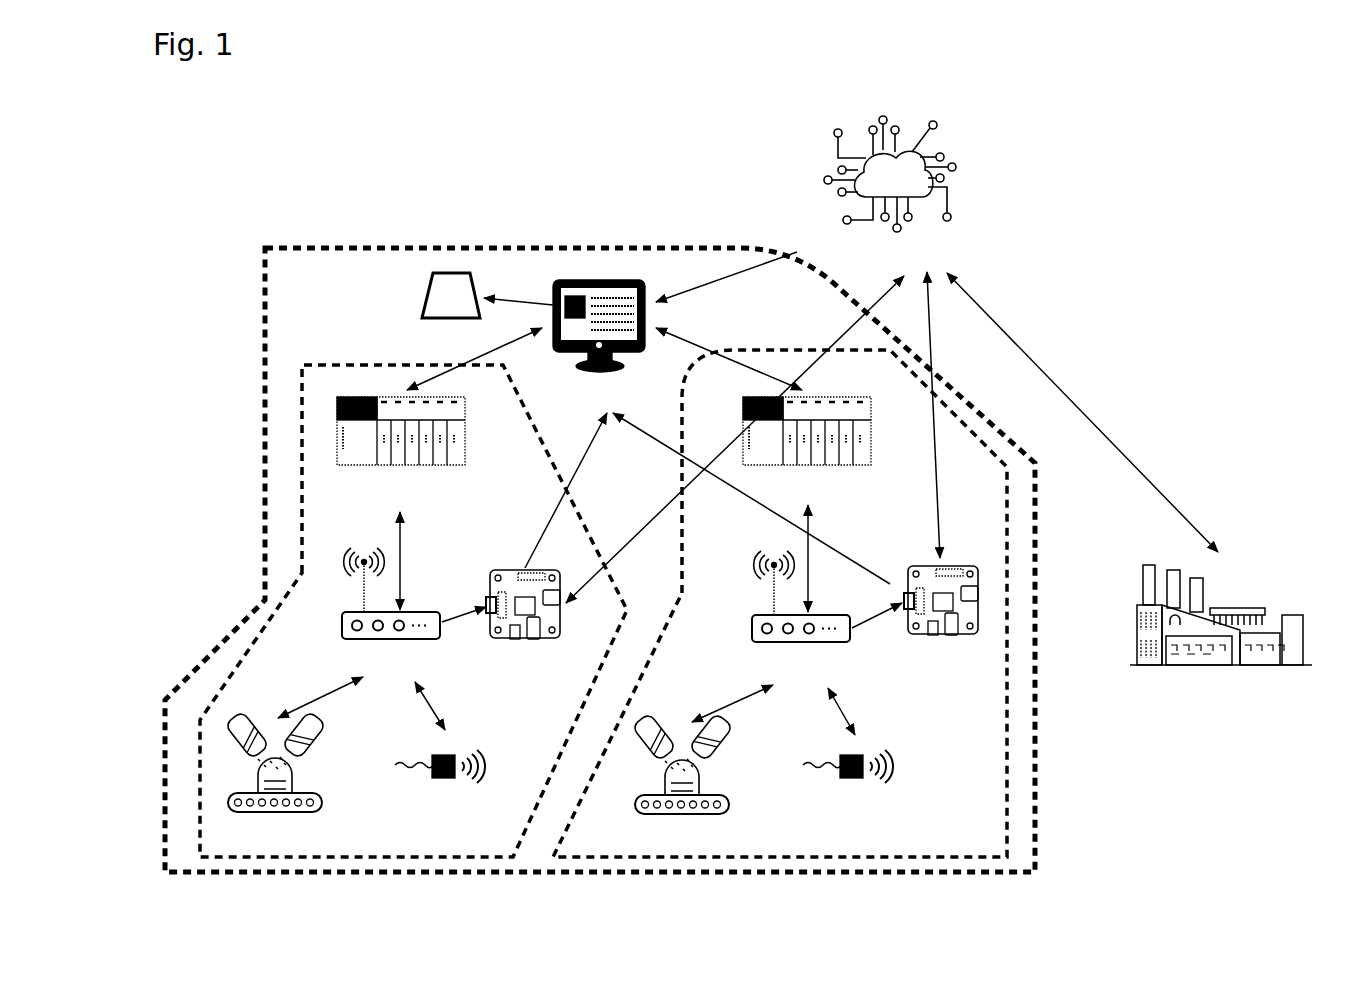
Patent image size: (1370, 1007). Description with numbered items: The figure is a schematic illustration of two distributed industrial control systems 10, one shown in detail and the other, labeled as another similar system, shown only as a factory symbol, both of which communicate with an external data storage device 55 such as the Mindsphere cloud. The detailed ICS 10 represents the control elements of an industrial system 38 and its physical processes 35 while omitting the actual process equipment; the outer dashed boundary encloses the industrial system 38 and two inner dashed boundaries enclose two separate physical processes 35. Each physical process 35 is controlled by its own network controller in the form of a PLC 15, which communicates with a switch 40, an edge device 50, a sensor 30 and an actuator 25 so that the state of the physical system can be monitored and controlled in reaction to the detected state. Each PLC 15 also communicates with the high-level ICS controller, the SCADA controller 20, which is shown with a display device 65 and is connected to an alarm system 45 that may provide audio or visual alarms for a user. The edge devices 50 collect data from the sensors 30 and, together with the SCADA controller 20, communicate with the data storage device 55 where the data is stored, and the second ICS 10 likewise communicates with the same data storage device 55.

The industrial control system 10 is at (754, 516).
The programmable logic controller 15 is at (357, 445).
The SCADA controller 20 is at (635, 288).
The actuator 25 is at (235, 805).
The sensor 30 is at (432, 772).
The physical process 35 is at (302, 572).
The industrial system 38 is at (221, 632).
The switch 40 is at (352, 625).
The alarm system 45 is at (457, 283).
The edge device 50 is at (515, 580).
The data storage device 55 is at (897, 165).
The display device 65 is at (628, 287).